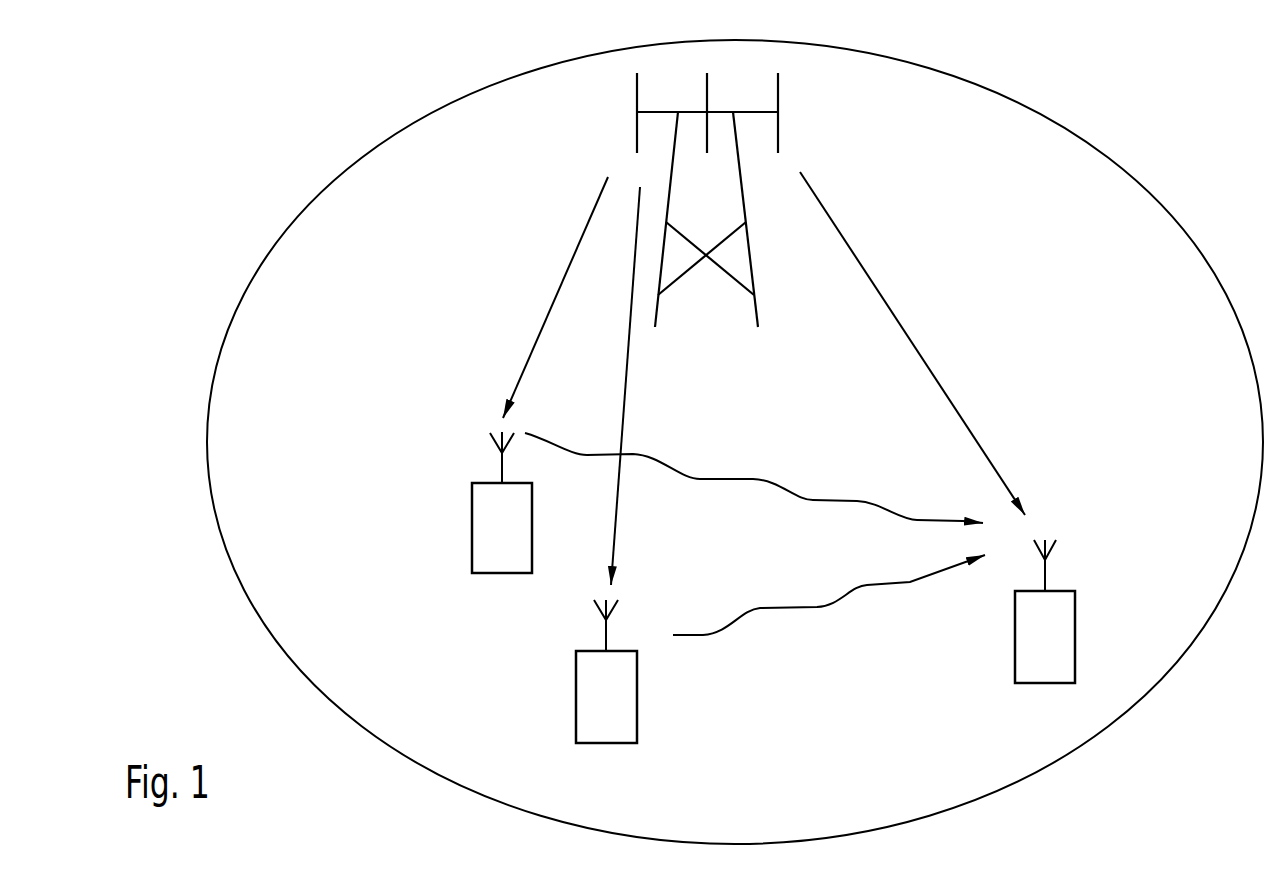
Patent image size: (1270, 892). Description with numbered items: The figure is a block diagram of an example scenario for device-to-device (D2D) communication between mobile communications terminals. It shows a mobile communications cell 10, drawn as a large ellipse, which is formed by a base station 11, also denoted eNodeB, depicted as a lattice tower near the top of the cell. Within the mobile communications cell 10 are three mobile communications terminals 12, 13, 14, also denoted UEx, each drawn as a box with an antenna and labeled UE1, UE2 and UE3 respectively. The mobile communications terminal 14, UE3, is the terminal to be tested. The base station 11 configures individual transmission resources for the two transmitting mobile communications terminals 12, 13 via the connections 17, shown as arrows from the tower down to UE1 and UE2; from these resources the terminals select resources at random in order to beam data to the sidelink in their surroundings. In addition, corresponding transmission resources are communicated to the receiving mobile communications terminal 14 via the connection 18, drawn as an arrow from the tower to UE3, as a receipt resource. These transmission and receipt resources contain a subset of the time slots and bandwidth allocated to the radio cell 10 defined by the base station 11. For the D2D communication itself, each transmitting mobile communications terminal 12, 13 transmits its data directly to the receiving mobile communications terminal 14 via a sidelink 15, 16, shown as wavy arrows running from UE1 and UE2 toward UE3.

The mobile communications cell 10 is at (397, 133).
The base station 11 is at (758, 310).
The mobile communications terminal 12 is at (472, 530).
The mobile communications terminal 13 is at (576, 700).
The mobile communications terminal 14 is at (1075, 637).
The sidelink 15 is at (756, 477).
The sidelink 16 is at (823, 607).
The connections 17 is at (633, 288).
The connection 18 is at (915, 345).